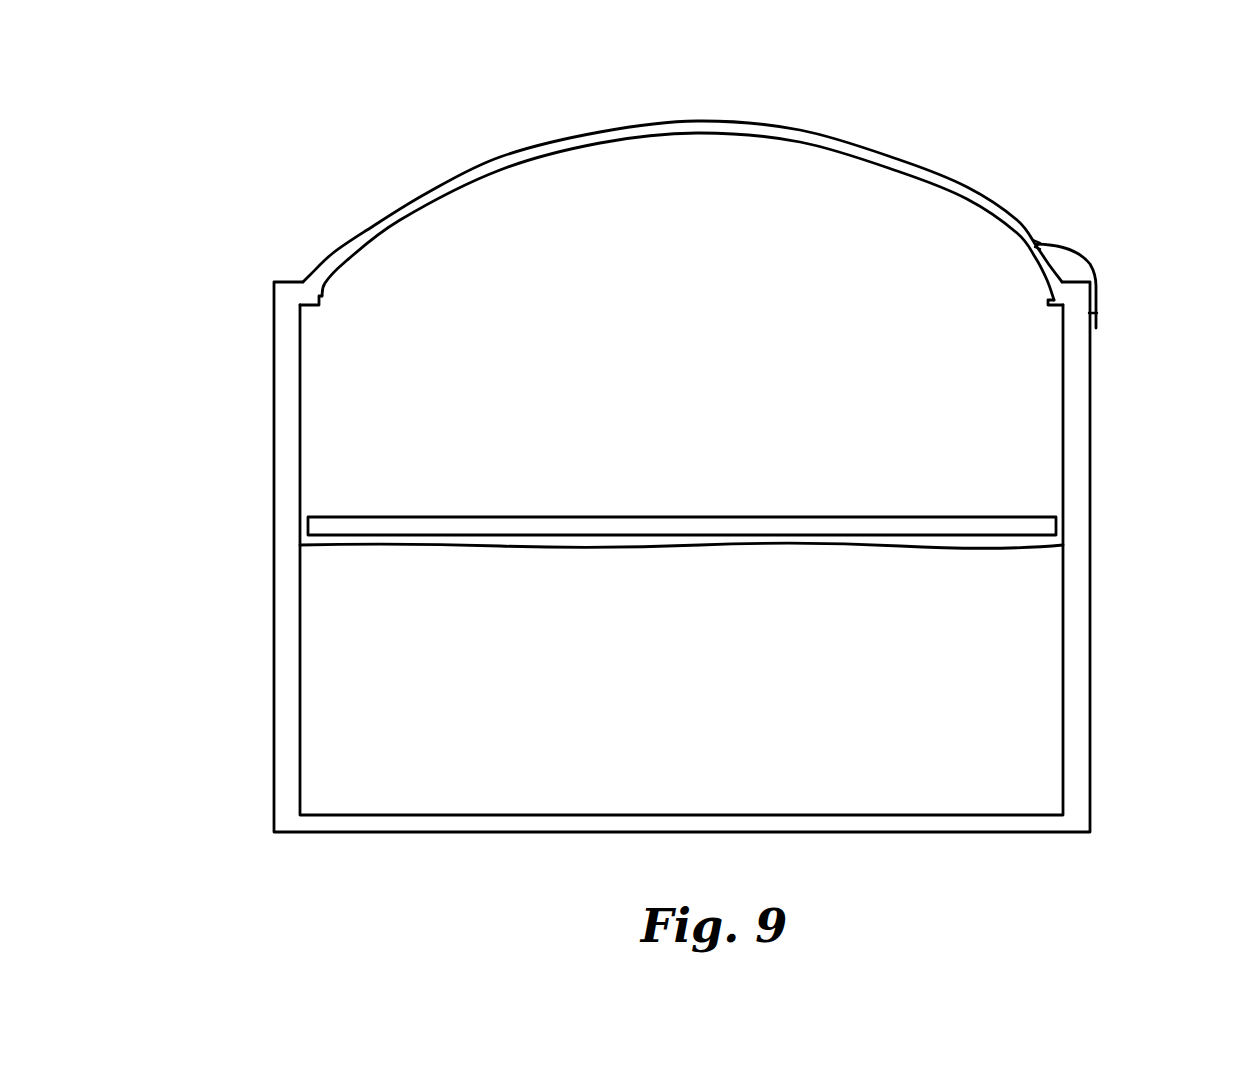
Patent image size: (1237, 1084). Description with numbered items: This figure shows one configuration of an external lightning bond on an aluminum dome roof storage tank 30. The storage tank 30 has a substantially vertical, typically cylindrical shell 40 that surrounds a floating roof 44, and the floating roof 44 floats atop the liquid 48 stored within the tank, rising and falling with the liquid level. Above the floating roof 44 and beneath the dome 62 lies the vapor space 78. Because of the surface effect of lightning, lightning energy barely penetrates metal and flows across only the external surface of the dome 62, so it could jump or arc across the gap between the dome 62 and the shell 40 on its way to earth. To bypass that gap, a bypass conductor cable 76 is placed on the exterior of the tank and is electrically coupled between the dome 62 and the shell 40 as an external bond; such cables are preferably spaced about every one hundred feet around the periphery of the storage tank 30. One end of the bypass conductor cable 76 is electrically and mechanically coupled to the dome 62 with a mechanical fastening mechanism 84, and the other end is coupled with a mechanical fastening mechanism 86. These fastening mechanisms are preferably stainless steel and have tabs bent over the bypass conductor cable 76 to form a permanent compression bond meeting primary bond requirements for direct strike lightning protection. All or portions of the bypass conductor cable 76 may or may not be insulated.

The storage tank 30 is at (1097, 162).
The shell 40 is at (292, 380).
The floating roof 44 is at (445, 524).
The liquid 48 is at (677, 665).
The dome 62 is at (485, 165).
The bypass conductor cable 76 is at (1085, 256).
The vapor space 78 is at (763, 346).
The mechanical fastening mechanism 84 is at (1038, 244).
The mechanical fastening mechanism 86 is at (1098, 313).